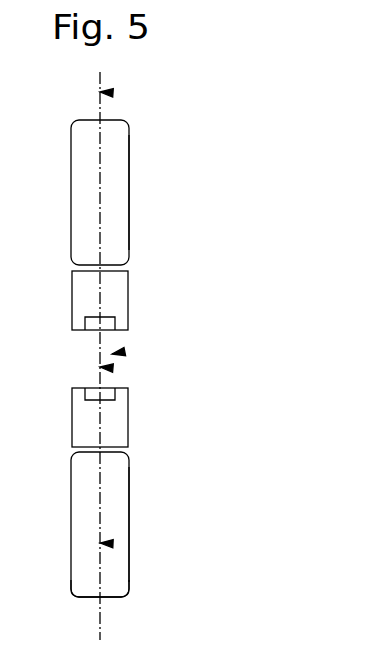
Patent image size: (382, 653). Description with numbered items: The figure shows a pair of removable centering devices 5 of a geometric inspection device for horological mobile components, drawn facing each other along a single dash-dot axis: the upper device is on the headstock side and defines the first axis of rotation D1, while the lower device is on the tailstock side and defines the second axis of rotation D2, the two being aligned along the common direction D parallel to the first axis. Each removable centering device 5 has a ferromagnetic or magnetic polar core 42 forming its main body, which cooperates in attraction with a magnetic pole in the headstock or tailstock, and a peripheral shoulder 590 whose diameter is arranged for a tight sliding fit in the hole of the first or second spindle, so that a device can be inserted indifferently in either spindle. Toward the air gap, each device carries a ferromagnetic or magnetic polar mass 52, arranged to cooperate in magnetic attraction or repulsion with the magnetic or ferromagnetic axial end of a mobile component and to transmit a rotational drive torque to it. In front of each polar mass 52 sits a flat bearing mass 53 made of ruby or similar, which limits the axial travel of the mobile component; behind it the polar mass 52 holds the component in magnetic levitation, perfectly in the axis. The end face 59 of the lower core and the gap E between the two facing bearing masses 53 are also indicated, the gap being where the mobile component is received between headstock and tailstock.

The removable centering device 5 is at (206, 136).
The polar core 42 is at (117, 160).
The peripheral shoulder 590 is at (141, 204).
The polar mass 52 is at (117, 292).
The bearing mass 53 is at (107, 325).
The end face 59 is at (117, 588).
The first axis of rotation D1 is at (113, 92).
The second axis of rotation D2 is at (112, 544).
The gap distance E is at (124, 352).
The common direction D is at (112, 368).